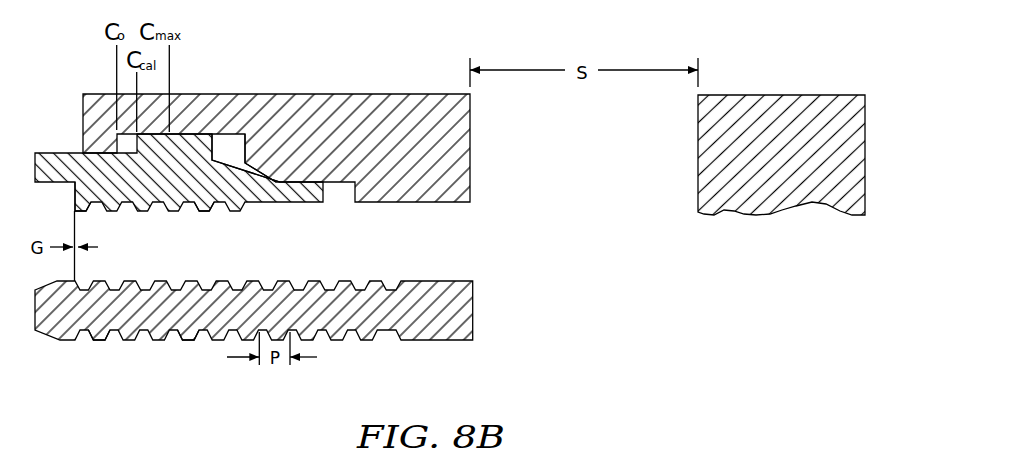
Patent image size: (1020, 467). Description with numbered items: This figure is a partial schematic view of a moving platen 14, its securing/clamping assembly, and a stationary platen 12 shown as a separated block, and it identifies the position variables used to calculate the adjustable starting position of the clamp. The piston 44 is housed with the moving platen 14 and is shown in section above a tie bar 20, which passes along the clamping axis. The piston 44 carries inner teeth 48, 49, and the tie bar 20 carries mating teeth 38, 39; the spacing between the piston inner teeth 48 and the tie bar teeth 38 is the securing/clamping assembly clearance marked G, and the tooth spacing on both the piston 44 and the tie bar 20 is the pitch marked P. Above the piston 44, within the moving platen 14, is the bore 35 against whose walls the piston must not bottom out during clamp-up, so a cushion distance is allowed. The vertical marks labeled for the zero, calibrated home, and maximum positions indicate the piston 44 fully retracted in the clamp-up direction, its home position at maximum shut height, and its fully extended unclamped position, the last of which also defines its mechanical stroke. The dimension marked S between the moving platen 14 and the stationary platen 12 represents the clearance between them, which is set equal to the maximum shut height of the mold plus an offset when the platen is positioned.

The first body 12 is at (783, 97).
The moving platen 14 is at (333, 93).
The tie bar 20 is at (458, 284).
The bore 35 is at (221, 136).
The teeth 38 is at (92, 337).
The thread 39 is at (194, 339).
The piston 44 is at (58, 153).
The inner teeth 48 is at (79, 204).
The thread 49 is at (202, 211).